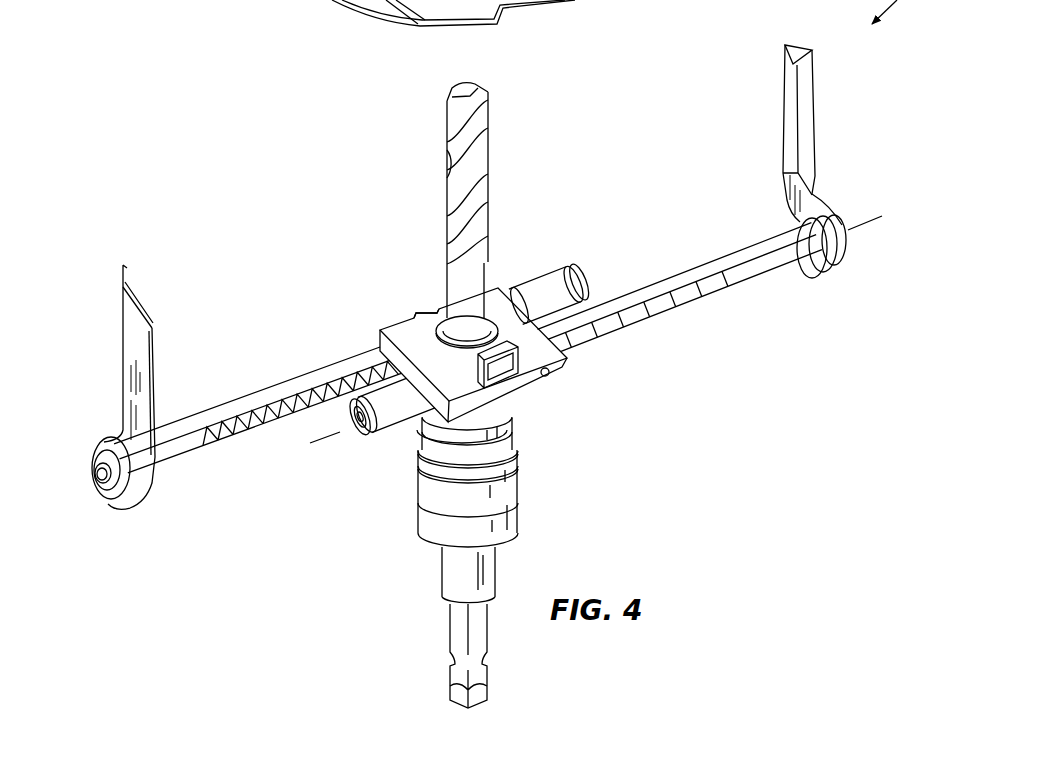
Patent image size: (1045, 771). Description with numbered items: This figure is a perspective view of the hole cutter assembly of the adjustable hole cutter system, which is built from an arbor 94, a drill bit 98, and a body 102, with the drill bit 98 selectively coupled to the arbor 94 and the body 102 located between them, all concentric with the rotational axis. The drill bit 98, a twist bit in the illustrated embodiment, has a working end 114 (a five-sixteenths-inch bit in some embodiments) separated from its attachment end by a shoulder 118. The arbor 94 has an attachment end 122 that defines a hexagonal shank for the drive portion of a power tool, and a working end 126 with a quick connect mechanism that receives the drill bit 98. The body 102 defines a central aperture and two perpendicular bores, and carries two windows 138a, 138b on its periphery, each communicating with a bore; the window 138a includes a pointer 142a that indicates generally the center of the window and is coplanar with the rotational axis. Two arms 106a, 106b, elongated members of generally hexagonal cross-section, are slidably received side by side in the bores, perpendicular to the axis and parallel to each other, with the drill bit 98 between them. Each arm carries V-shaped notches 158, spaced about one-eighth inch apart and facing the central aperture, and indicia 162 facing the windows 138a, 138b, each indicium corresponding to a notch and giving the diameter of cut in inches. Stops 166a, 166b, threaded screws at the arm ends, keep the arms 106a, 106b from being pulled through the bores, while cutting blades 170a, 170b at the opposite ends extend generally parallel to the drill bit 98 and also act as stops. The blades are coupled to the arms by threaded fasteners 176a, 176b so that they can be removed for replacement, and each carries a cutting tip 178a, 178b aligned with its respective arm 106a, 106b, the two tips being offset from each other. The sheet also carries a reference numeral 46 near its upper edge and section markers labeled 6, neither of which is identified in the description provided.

The cutting head 46 is at (505, 13).
The section line 6 is at (866, 224).
The arbor 94 is at (494, 562).
The drill bit 98 is at (466, 215).
The body 102 is at (477, 346).
The arm 106a is at (539, 348).
The arm 106b is at (374, 383).
The working end 114 is at (452, 113).
The shoulder 118 is at (500, 318).
The attachment end 122 is at (457, 637).
The working end 126 is at (417, 475).
The window 138a is at (522, 352).
The window 138b is at (435, 313).
The pointer 142a is at (498, 384).
The notches 158 is at (215, 478).
The indicia 162 is at (678, 340).
The stop 166a is at (343, 408).
The stop 166b is at (585, 279).
The cutting blade 170a is at (833, 141).
The cutting blade 170b is at (114, 394).
The threaded fastener 176a is at (838, 218).
The threaded fastener 176b is at (102, 493).
The cutting tip 178a is at (812, 48).
The cutting tip 178b is at (123, 267).